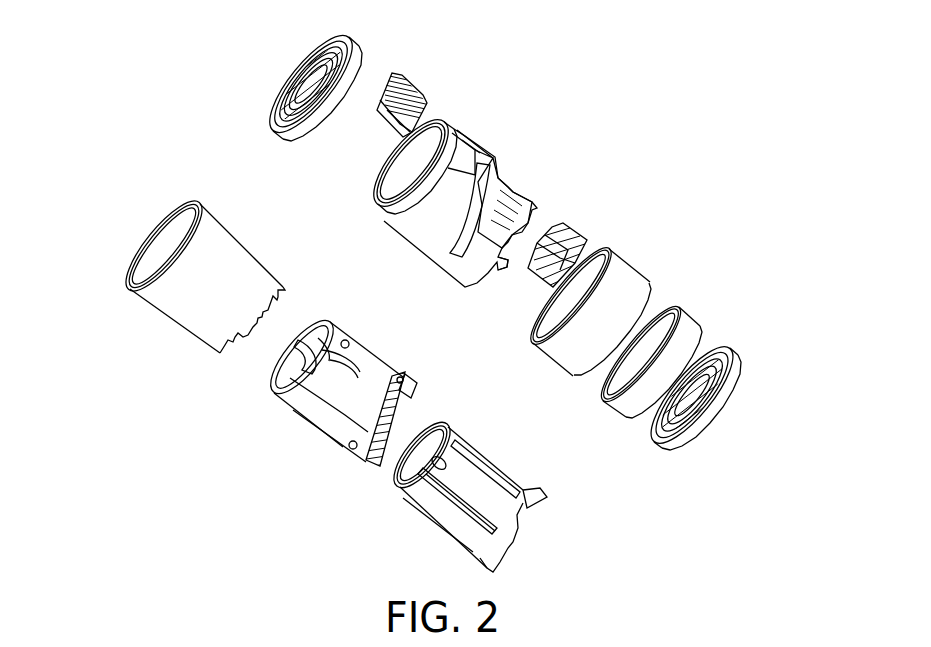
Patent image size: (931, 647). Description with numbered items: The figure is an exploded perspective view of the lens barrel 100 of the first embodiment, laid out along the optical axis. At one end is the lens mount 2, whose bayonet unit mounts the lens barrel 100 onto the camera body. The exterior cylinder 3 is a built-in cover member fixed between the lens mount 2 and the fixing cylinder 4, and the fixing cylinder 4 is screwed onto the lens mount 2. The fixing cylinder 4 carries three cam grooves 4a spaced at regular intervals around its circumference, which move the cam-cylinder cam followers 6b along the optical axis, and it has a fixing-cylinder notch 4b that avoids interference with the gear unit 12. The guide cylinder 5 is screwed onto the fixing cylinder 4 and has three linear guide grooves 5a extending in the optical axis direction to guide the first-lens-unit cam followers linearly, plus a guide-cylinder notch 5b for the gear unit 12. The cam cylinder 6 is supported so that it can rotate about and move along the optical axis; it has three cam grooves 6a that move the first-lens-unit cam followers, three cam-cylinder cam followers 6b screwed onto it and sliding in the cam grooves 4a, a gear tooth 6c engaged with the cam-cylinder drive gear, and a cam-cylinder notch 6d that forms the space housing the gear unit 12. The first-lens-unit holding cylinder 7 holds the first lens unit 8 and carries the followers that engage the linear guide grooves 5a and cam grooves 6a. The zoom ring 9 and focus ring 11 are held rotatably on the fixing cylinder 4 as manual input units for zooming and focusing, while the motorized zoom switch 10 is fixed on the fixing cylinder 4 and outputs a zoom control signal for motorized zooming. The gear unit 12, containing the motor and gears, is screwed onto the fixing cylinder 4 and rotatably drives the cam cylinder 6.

The lens barrel 100 is at (201, 64).
The lens mount 2 is at (728, 352).
The exterior cylinder 3 is at (688, 313).
The fixing cylinder 4 is at (513, 208).
The cam groove 4a is at (475, 226).
The fixing-cylinder notch 4b is at (512, 200).
The guide cylinder 5 is at (500, 481).
The linear guide groove 5a is at (447, 487).
The guide-cylinder notch 5b is at (520, 508).
The cam cylinder 6 is at (347, 422).
The cam groove 6a is at (340, 423).
The cam-cylinder cam follower 6b is at (403, 375).
The gear tooth 6c is at (403, 407).
The cam-cylinder notch 6d is at (410, 396).
The first-lens-unit holding cylinder 7 is at (177, 248).
The first lens unit 8 is at (160, 250).
The zoom ring 9 is at (632, 269).
The motorized zoom switch 10 is at (425, 94).
The focus ring 11 is at (362, 52).
The gear unit 12 is at (578, 223).